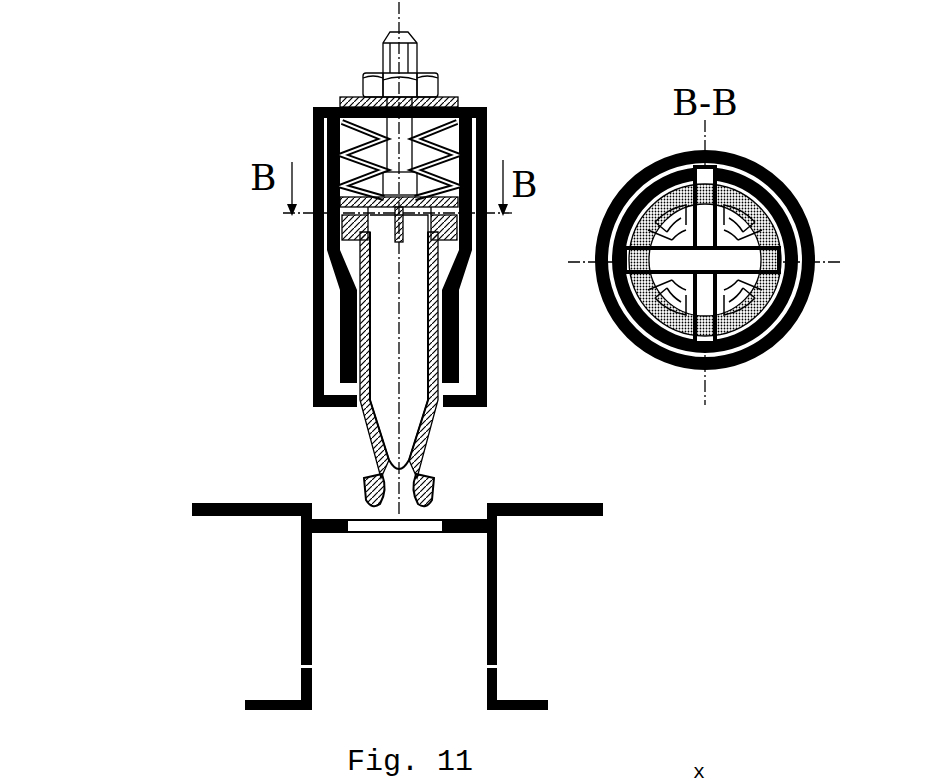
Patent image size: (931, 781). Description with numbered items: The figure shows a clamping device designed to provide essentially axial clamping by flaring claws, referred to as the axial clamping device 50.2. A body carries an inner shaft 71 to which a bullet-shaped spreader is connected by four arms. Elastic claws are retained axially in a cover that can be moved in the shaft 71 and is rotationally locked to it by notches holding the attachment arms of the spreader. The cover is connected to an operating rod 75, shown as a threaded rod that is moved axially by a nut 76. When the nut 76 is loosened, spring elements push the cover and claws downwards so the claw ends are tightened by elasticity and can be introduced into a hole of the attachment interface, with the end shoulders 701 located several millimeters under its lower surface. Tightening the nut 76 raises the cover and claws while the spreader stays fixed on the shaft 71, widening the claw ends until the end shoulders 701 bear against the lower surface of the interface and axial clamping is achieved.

The axial clamping device 50.2 is at (165, 112).
The inner shaft 71 is at (343, 318).
The operating rod 75 is at (355, 100).
The nut 76 is at (428, 78).
The end shoulders 701 is at (425, 480).